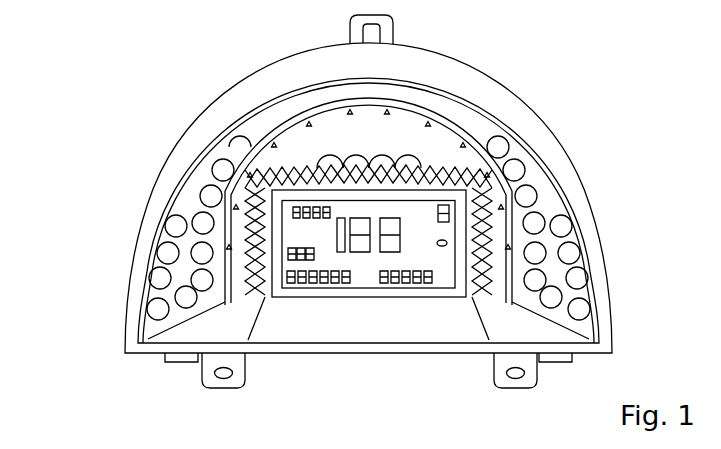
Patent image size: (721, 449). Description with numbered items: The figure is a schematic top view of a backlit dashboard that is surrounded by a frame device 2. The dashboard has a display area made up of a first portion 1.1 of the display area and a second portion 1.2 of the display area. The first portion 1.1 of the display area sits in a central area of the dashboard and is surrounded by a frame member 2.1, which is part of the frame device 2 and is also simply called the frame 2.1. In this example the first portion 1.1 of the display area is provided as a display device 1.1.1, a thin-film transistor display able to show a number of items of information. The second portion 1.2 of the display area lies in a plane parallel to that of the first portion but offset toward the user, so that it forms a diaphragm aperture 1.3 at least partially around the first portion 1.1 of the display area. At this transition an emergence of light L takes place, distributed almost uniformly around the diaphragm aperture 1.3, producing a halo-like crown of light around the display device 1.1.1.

The first portion of the display area 1.1 is at (240, 241).
The display device 1.1.1 is at (288, 262).
The second portion of the display area 1.2 is at (310, 157).
The diaphragm aperture 1.3 is at (497, 290).
The frame device 2 is at (488, 95).
The frame member 2.1 is at (495, 187).
The light L is at (487, 252).